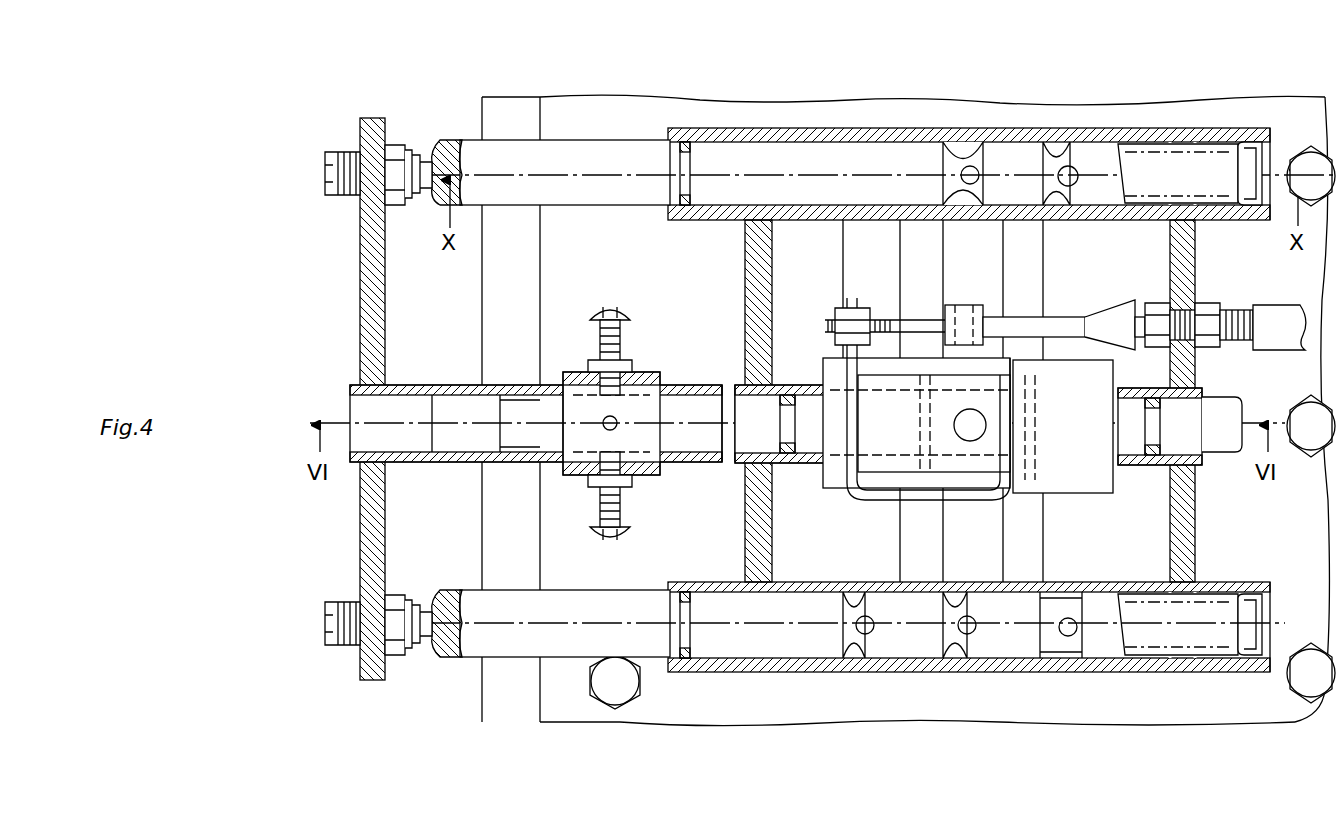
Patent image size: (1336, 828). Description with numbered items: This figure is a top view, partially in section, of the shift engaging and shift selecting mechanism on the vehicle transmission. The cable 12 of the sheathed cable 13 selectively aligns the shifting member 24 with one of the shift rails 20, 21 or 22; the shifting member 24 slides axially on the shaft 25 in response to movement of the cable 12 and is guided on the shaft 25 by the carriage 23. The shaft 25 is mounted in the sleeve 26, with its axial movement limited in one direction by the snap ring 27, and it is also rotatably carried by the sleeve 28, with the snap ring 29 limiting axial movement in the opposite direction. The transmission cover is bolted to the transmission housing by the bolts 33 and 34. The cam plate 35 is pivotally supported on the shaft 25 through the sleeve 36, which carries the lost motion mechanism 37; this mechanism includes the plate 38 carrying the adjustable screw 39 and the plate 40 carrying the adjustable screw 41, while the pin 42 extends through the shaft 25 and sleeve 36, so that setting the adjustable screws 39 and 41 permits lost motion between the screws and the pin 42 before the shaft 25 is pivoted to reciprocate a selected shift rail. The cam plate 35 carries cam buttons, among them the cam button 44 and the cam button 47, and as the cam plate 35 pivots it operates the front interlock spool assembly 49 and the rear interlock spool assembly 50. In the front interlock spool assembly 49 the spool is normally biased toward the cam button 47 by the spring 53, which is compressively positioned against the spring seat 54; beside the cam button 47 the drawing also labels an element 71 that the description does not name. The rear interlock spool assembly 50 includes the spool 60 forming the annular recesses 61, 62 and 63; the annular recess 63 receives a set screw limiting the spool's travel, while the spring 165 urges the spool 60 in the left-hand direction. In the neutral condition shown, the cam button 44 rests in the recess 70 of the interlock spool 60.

The cable 12 is at (915, 318).
The sheathed cable 13 is at (1268, 300).
The shift rail 20 is at (1095, 532).
The shift rail 21 is at (997, 532).
The shift rail 22 is at (893, 532).
The carriage 23 is at (855, 500).
The shifting member 24 is at (880, 375).
The shaft 25 is at (1035, 445).
The sleeve 26 is at (1150, 465).
The snap ring 27 is at (1208, 397).
The sleeve 28 is at (787, 463).
The snap ring 29 is at (730, 465).
The bolt 33 is at (632, 680).
The bolt 34 is at (1318, 452).
The cam plate 35 is at (360, 303).
The sleeve 36 is at (446, 385).
The lost motion mechanism 37 is at (650, 365).
The plate 38 is at (635, 475).
The adjustable screw 39 is at (630, 530).
The plate 40 is at (575, 372).
The adjustable screw 41 is at (618, 312).
The pin 42 is at (618, 420).
The cam button 44 is at (445, 620).
The cam button 47 is at (432, 160).
The front interlock spool assembly 49 is at (768, 135).
The rear interlock spool assembly 50 is at (805, 662).
The spring 53 is at (1130, 143).
The spring seat 54 is at (1248, 142).
The spool 60 is at (630, 595).
The annular recess 61 is at (855, 660).
The annular recess 62 is at (953, 660).
The annular recess 63 is at (1075, 660).
The recess 70 is at (430, 640).
The adjusting screw 71 is at (425, 190).
The spring 165 is at (1192, 655).